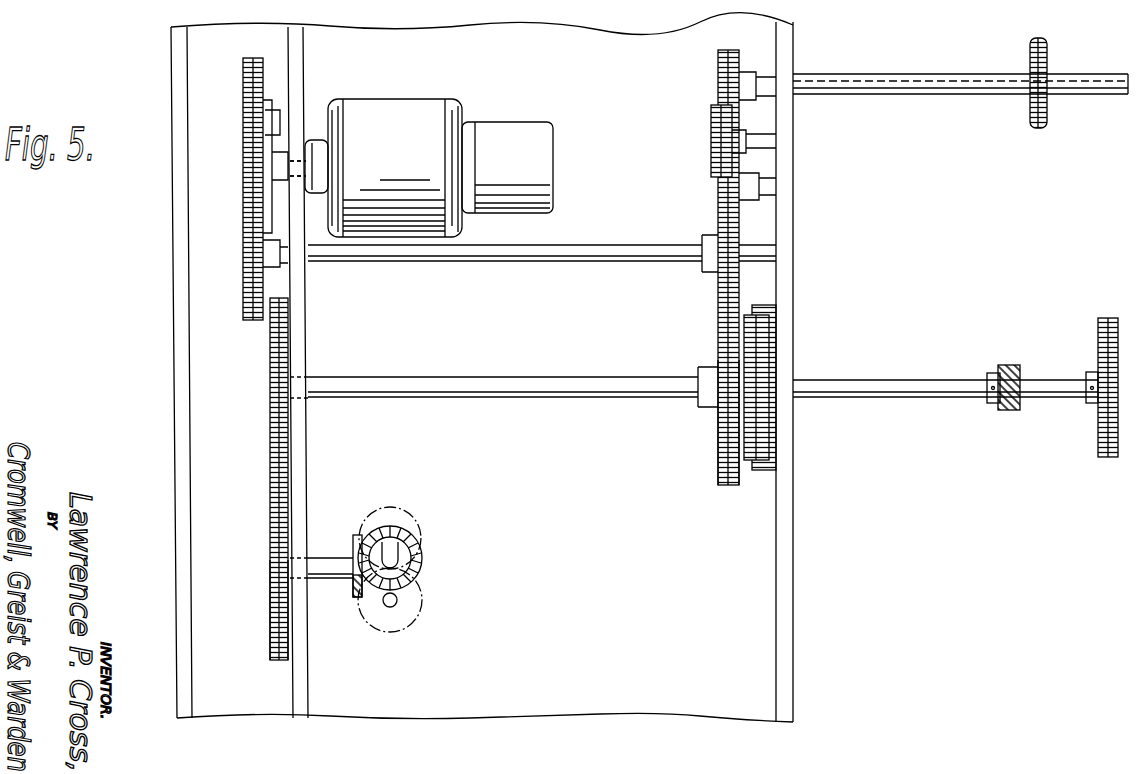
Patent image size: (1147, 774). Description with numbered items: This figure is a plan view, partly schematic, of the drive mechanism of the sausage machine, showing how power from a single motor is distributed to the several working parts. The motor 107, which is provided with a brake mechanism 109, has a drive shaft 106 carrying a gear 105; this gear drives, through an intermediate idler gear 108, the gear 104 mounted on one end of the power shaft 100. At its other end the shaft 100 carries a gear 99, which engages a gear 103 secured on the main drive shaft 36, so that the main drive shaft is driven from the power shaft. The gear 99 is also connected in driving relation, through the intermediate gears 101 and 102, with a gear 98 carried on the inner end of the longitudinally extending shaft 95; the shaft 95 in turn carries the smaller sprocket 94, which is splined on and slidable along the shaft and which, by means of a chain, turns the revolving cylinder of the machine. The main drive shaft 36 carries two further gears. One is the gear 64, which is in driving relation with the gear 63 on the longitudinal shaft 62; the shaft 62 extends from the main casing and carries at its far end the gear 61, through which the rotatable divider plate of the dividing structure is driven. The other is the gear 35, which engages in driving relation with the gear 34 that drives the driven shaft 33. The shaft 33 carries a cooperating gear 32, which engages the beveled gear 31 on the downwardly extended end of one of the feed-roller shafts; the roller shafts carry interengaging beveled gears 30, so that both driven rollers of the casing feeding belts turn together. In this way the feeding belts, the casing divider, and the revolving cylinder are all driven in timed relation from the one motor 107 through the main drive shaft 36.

The beveled gears 30 is at (415, 615).
The beveled gear 31 is at (400, 565).
The cooperating gear 32 is at (358, 590).
The driven shaft 33 is at (320, 565).
The gear 34 is at (272, 605).
The gear 35 is at (270, 402).
The drive shaft 36 is at (405, 390).
The gear 61 is at (1008, 365).
The longitudinal shaft 62 is at (950, 390).
The gear 63 is at (772, 328).
The gear 64 is at (759, 353).
The sprocket 94 is at (1045, 118).
The shaft 95 is at (885, 88).
The gear 98 is at (718, 81).
The gear 99 is at (718, 283).
The shaft 100 is at (495, 262).
The intermediate gear 101 is at (711, 132).
The intermediate gear 102 is at (718, 186).
The gear 103 is at (718, 437).
The gear 104 is at (243, 270).
The gear 105 is at (270, 212).
The drive shaft 106 is at (310, 168).
The motor 107 is at (397, 105).
The idler gear 108 is at (243, 81).
The brake mechanism 109 is at (515, 128).